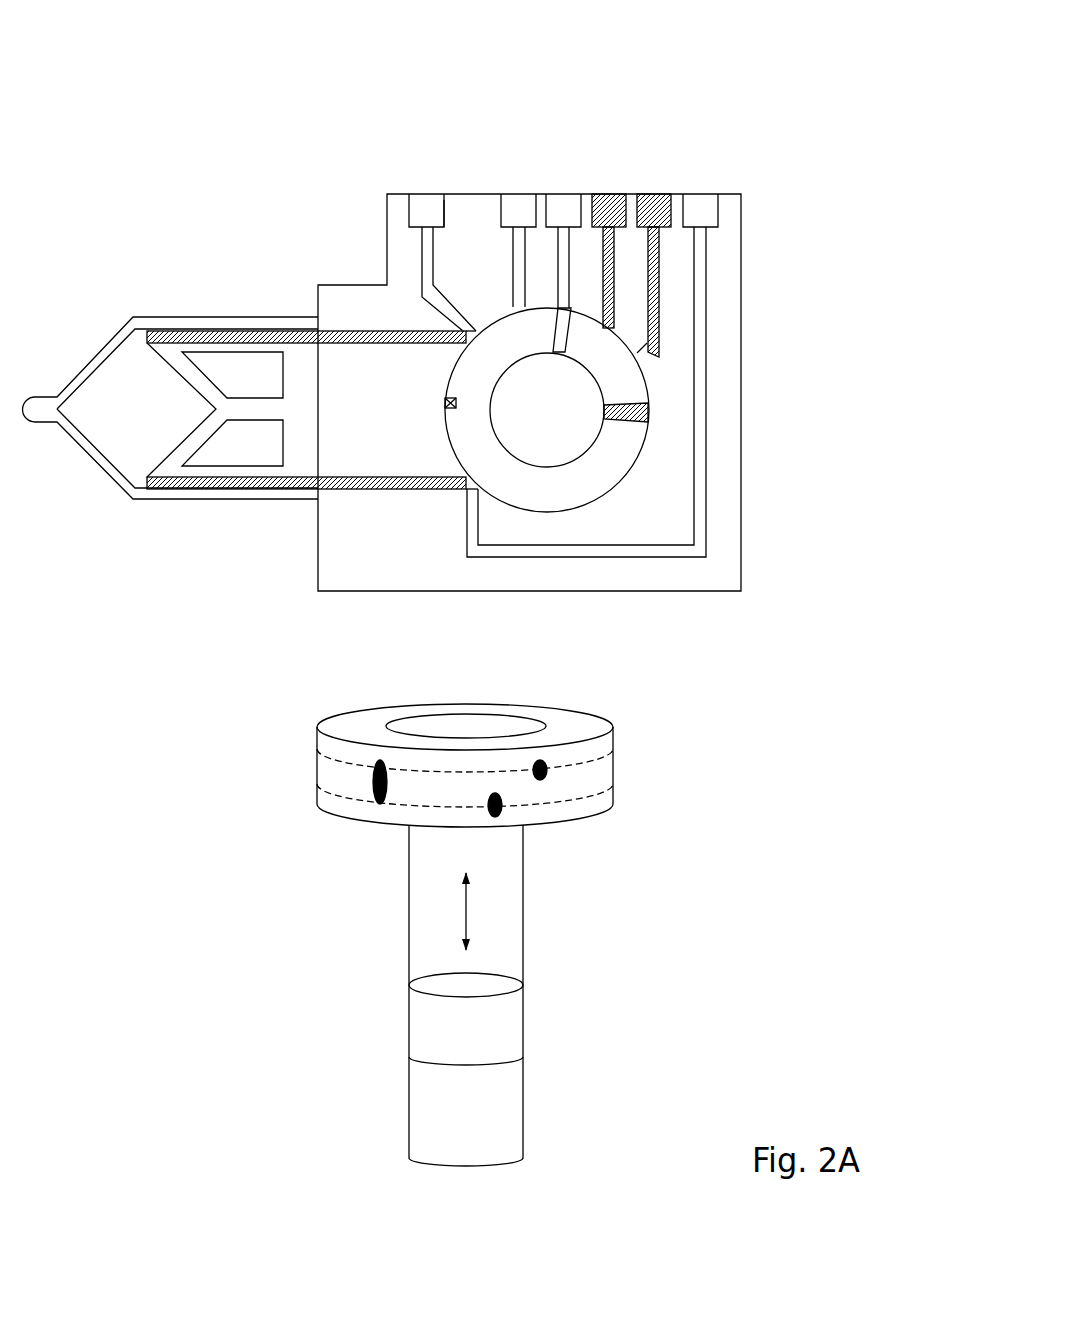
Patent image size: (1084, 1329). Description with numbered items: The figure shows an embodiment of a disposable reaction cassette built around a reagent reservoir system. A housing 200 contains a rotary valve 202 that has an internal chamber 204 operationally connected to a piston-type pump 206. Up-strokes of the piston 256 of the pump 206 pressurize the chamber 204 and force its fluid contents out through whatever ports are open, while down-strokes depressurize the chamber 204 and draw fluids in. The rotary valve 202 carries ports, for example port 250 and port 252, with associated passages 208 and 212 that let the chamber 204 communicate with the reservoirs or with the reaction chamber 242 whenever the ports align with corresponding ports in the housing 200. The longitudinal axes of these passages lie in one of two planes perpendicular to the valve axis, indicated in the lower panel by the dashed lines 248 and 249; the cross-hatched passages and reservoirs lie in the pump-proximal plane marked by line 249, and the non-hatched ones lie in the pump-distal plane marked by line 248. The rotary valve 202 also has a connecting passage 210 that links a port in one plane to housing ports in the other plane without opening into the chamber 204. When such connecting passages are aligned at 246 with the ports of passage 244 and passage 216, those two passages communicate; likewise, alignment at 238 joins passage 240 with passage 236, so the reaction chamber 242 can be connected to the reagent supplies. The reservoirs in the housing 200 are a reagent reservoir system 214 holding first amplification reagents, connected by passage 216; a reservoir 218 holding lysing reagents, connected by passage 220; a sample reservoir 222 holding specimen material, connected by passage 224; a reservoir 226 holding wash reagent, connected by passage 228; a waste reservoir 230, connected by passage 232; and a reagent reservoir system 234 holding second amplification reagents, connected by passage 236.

The housing 200 is at (742, 533).
The rotary valve 202 is at (592, 500).
The internal chamber 204 is at (430, 723).
The piston-type pump 206 is at (373, 839).
The passage 208 is at (650, 407).
The connecting passage 210 is at (445, 401).
The passage 212 is at (577, 329).
The reagent reservoir system 214 is at (420, 205).
The passage 216 is at (420, 252).
The reservoir 218 is at (523, 204).
The passage 220 is at (445, 204).
The sample reservoir 222 is at (557, 204).
The passage 224 is at (572, 273).
The reservoir 226 is at (603, 194).
The passage 228 is at (616, 285).
The waste reservoir 230 is at (658, 205).
The passage 232 is at (660, 297).
The reagent reservoir system 234 is at (705, 207).
The passage 236 is at (707, 467).
The alignment position 238 is at (455, 500).
The passage 240 is at (270, 488).
The reaction chamber 242 is at (170, 408).
The passage 244 is at (248, 331).
The alignment position 246 is at (432, 318).
The pump-distal plane 248 is at (602, 760).
The pump-proximal plane 249 is at (602, 793).
The port 250 is at (500, 805).
The port 252 is at (543, 780).
The piston 256 is at (500, 1018).